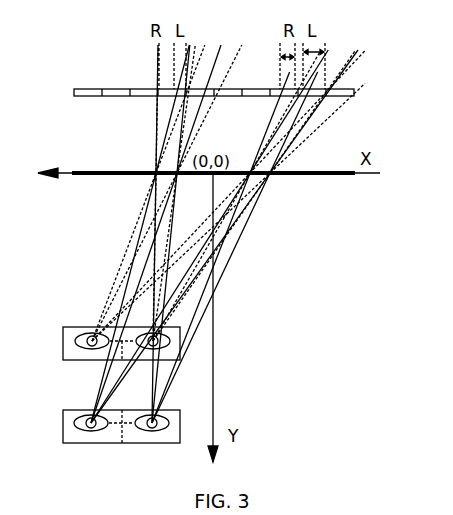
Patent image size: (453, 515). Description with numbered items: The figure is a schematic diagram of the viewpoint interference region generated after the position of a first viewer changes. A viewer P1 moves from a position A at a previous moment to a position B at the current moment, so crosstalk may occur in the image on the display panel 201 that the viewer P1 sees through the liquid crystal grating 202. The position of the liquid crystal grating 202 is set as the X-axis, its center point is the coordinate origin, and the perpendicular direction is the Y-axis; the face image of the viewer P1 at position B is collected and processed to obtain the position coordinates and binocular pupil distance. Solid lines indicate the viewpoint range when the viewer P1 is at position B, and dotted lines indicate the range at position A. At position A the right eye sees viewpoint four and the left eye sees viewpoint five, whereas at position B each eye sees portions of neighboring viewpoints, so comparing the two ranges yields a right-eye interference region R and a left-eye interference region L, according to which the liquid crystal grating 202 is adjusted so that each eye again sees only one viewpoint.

The display panel 201 is at (412, 60).
The liquid crystal grating 202 is at (345, 174).
The viewer P1 is at (63, 338).